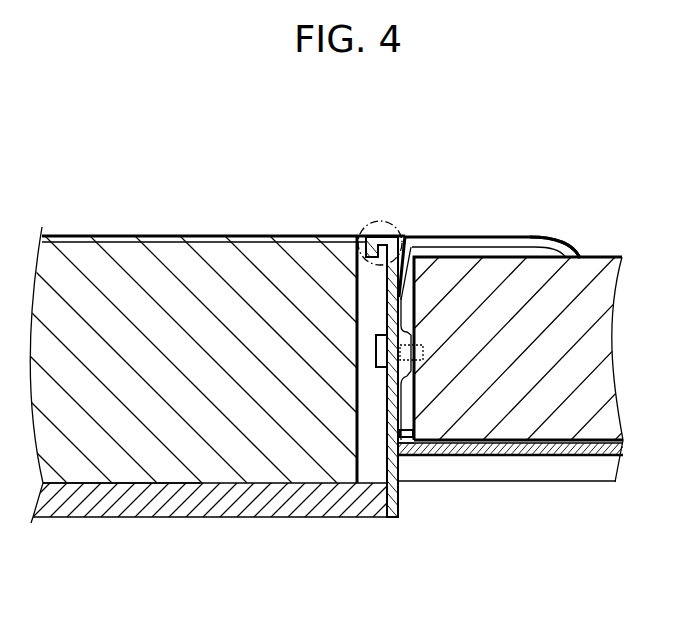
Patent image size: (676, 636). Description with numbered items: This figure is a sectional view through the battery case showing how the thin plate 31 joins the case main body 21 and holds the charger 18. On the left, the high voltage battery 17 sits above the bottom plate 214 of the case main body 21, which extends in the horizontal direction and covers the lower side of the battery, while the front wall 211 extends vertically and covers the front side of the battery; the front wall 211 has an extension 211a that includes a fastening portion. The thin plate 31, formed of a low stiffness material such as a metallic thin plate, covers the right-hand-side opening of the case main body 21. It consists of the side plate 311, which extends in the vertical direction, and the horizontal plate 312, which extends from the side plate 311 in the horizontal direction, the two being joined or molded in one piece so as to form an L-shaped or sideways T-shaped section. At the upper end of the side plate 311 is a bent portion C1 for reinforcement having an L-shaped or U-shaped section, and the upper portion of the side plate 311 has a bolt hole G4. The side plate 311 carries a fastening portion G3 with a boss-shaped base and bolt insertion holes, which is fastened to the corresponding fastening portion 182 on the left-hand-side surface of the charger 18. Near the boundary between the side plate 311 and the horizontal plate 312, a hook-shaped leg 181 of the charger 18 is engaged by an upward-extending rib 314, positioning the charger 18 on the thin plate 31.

The high voltage battery 17 is at (180, 262).
The front wall 211 is at (263, 235).
The side plate 311 is at (392, 302).
The bent portion C1 is at (377, 222).
The bolt hole G4 is at (404, 243).
The fastening portion G3 is at (404, 337).
The thin plate 31 is at (485, 233).
The fastening portion 182 is at (507, 258).
The charger 18 is at (597, 302).
The leg 181 is at (407, 437).
The horizontal plate 312 is at (527, 456).
The rib 314 is at (405, 444).
The extension 211a is at (598, 476).
The bottom plate 214 is at (250, 505).
The case main body 21 is at (93, 522).